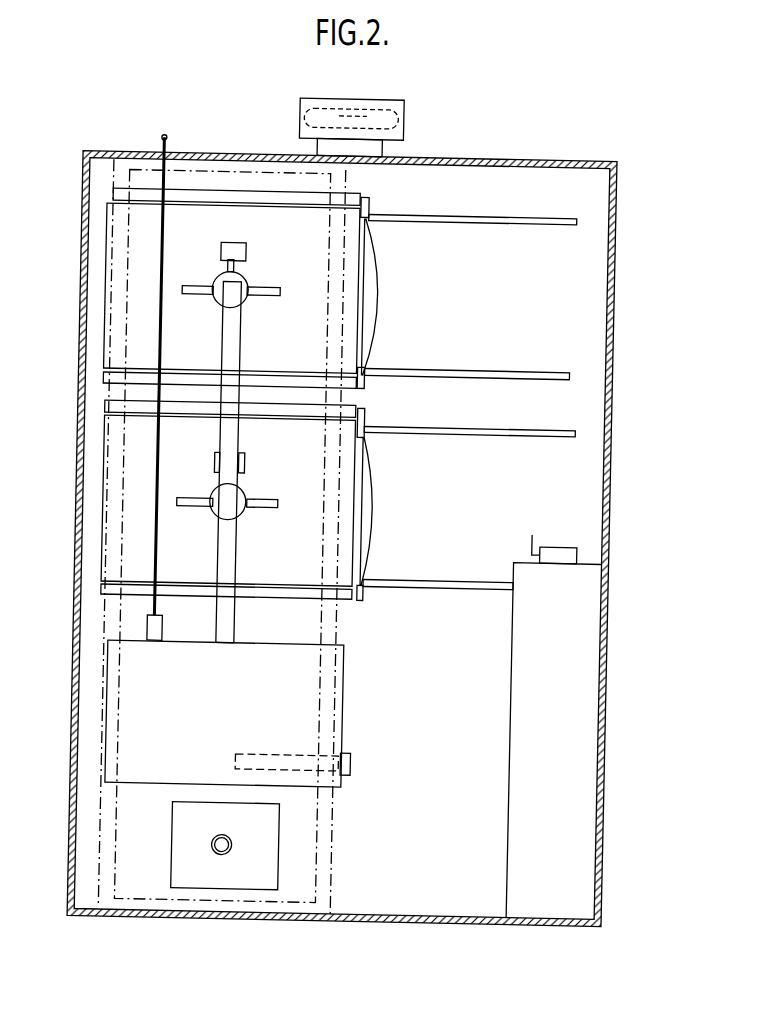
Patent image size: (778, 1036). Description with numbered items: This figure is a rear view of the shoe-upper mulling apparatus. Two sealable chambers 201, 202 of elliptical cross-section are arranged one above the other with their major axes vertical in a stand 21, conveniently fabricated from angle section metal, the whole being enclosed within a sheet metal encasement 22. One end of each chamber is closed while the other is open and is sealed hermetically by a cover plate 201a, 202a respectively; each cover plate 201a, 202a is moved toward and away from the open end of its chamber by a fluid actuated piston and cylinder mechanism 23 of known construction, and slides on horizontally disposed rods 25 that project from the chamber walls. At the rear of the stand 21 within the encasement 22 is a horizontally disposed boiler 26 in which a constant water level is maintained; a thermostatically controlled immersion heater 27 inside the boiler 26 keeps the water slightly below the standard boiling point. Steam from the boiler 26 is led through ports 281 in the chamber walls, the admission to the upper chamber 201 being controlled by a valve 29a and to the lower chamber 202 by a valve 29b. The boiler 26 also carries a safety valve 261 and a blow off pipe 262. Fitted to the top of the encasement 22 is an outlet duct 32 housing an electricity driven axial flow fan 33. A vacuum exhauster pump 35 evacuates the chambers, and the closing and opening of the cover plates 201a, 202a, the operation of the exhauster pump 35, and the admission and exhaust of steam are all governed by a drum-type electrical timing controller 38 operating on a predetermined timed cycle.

The stand 21 is at (104, 327).
The sheet metal encasement 22 is at (610, 278).
The fluid actuated piston and cylinder mechanism 23 is at (363, 176).
The horizontally disposed rods 25 is at (497, 221).
The boiler 26 is at (245, 700).
The thermostatically controlled immersion heater 27 is at (355, 764).
The valve 29a is at (238, 246).
The valve 29b is at (246, 463).
The outlet duct 32 is at (364, 145).
The electricity driven axial flow fan 33 is at (378, 105).
The vacuum exhauster pump 35 is at (269, 845).
The electrical timing controller 38 is at (556, 541).
The sealable chamber 201 is at (206, 239).
The cover plate 201a is at (372, 278).
The sealable chamber 202 is at (208, 474).
The cover plate 202a is at (377, 500).
The safety valve 261 is at (165, 633).
The blow off pipe 262 is at (158, 566).
The ports 281 is at (252, 288).